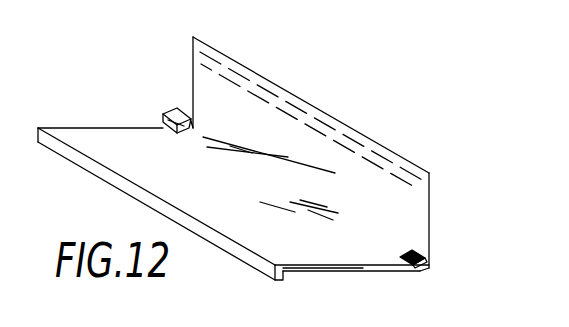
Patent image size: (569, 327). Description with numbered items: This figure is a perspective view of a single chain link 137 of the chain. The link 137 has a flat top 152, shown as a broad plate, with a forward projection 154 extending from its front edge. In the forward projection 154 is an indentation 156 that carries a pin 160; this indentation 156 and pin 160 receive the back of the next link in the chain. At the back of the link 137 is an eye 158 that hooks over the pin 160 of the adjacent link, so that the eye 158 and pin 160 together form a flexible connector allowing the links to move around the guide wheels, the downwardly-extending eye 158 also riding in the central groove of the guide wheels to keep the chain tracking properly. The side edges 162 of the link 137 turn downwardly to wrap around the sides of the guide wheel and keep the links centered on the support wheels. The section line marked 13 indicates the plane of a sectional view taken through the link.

The chain link 137 is at (317, 137).
The flat top 152 is at (263, 195).
The forward projection 154 is at (357, 267).
The indentation 156 is at (406, 254).
The eye 158 is at (162, 121).
The pin 160 is at (430, 267).
The side edges 162 is at (227, 248).
The section line 13- 13 is at (137, 99).